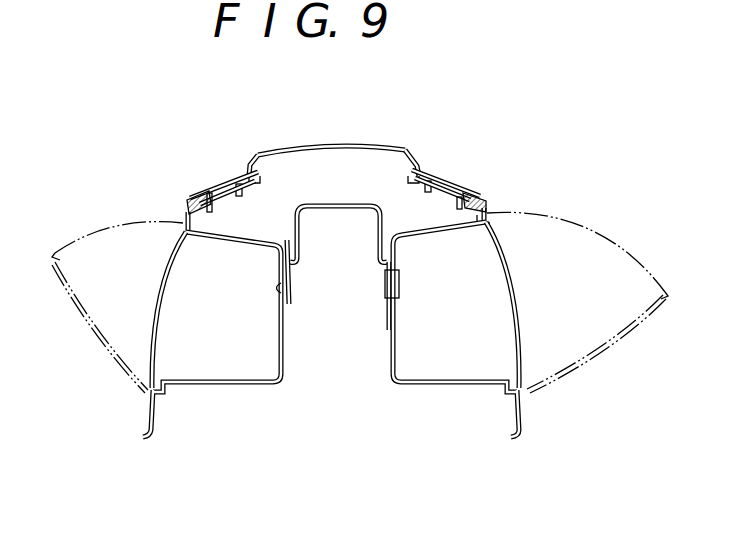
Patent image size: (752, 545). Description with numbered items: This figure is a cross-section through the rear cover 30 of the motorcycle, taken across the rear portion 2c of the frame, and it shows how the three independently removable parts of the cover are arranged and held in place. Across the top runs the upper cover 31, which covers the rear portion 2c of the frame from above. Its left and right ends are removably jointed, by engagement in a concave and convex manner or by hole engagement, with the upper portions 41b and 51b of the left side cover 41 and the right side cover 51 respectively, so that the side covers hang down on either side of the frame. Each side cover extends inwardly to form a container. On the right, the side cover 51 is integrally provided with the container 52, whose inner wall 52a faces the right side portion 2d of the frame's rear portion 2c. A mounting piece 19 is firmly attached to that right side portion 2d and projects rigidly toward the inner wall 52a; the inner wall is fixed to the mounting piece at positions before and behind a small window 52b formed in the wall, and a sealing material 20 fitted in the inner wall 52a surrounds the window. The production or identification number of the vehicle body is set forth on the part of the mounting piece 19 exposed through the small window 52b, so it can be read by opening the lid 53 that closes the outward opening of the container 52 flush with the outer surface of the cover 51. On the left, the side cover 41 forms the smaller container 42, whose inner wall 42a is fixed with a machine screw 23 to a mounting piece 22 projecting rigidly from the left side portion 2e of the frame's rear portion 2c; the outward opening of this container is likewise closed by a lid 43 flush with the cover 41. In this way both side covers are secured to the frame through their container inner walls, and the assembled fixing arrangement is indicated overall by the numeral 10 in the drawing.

The fixing device 10 is at (412, 285).
The mounting piece 19 is at (381, 267).
The sealing material 20 is at (398, 267).
The mounting piece 22 is at (292, 260).
The machine screw 23 is at (275, 288).
The rear portion 2c is at (332, 203).
The right side portion 2d is at (386, 222).
The left side portion 2e is at (287, 226).
The rear cover 30 is at (430, 142).
The upper cover 31 is at (360, 147).
The left side cover 41 is at (200, 186).
The upper portion 41b is at (223, 172).
The container 42 is at (205, 388).
The inner wall 42a is at (272, 343).
The lid 43 is at (155, 312).
The right side cover 51 is at (483, 192).
The upper portion 51b is at (448, 180).
The container 52 is at (433, 386).
The inner wall 52a is at (395, 343).
The small window 52b is at (400, 297).
The lid 53 is at (517, 313).